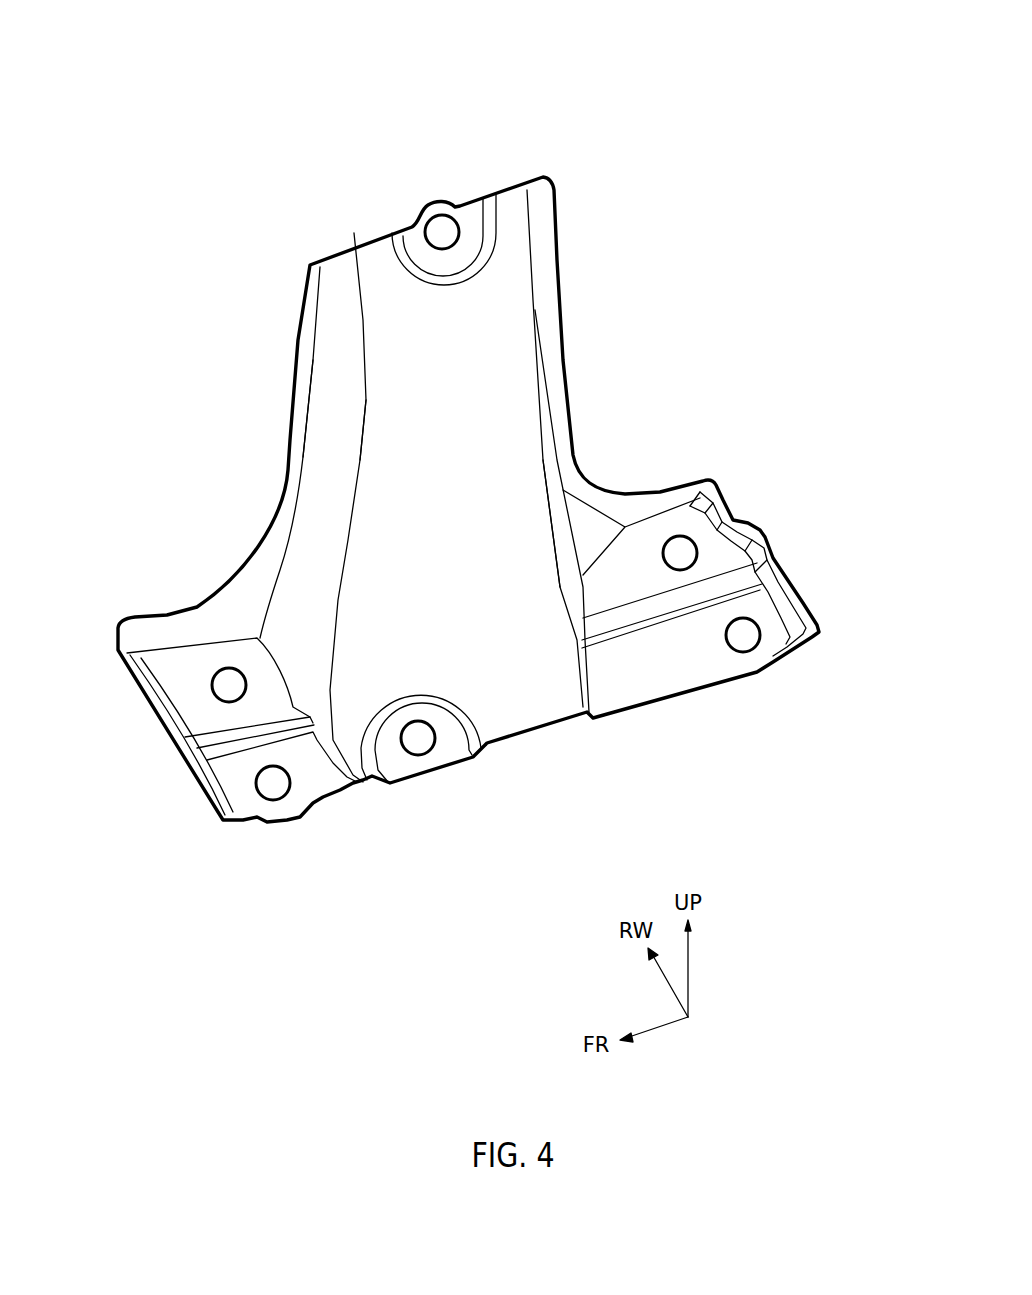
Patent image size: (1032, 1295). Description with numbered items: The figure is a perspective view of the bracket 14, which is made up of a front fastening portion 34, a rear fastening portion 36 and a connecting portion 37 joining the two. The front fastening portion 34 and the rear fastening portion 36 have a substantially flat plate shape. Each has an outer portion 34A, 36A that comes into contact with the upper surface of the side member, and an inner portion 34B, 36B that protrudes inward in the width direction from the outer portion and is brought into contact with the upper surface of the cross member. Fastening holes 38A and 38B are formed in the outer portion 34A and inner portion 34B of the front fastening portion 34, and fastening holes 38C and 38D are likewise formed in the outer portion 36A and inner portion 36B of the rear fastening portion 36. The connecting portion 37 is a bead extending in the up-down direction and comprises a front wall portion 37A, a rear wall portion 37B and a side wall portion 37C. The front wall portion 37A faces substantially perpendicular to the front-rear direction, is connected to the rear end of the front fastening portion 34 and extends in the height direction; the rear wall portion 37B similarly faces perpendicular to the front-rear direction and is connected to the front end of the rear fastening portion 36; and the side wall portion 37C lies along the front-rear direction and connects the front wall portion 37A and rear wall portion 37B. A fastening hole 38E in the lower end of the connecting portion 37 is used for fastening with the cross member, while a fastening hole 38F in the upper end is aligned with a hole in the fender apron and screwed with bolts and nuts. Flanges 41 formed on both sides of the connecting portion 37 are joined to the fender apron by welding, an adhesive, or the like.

The bracket 14 is at (693, 190).
The front fastening portion 34 is at (140, 697).
The outer portion 34A is at (187, 677).
The inner portion 34B is at (317, 783).
The rear fastening portion 36 is at (704, 689).
The outer portion 36A is at (648, 546).
The inner portion 36B is at (640, 663).
The connecting portion 37 is at (357, 243).
The front wall portion 37A is at (330, 362).
The rear wall portion 37B is at (560, 515).
The side wall portion 37C is at (380, 427).
The fastening hole 38A is at (228, 678).
The fastening hole 38B is at (274, 786).
The fastening hole 38C is at (681, 553).
The fastening hole 38D is at (747, 631).
The fastening hole 38E is at (420, 740).
The fastening hole 38F is at (442, 228).
The flanges 41 is at (263, 587).